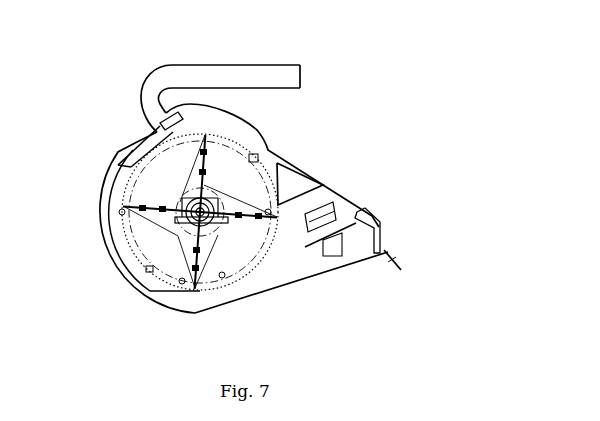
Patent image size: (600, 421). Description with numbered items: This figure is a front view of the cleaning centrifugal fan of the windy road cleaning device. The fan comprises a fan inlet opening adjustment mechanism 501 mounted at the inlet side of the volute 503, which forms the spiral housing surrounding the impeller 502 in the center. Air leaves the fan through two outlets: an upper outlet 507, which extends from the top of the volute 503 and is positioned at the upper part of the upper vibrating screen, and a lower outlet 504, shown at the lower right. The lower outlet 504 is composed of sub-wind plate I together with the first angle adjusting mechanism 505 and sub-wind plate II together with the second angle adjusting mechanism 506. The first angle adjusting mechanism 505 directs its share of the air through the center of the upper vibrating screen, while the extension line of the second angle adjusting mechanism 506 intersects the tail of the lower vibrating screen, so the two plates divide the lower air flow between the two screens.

The fan inlet opening adjustment mechanism 501 is at (163, 120).
The impeller 502 is at (198, 264).
The volute 503 is at (173, 304).
The lower outlet 504 is at (307, 263).
The sub-wind plate I and first angle adjusting mechanism 505 is at (330, 212).
The sub-wind plate II and second angle adjusting mechanism 506 is at (362, 218).
The upper outlet 507 is at (285, 72).